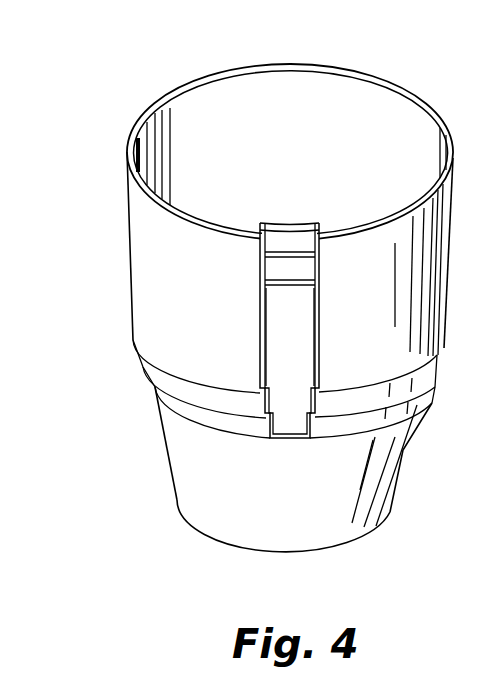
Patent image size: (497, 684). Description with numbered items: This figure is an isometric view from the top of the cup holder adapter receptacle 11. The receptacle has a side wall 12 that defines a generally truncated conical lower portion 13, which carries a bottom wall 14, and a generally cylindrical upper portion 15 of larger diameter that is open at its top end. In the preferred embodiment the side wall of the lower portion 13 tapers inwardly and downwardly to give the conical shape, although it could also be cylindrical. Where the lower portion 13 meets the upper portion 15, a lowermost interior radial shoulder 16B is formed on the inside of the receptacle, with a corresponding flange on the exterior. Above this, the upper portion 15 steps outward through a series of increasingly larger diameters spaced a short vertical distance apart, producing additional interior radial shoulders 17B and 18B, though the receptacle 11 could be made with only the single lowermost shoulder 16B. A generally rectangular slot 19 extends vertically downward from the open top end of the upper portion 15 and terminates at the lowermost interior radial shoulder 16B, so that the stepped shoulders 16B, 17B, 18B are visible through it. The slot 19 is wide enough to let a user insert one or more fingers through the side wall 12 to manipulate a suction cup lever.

The cup holder adapter receptacle 11 is at (211, 63).
The side wall 12 is at (140, 258).
The lower portion 13 is at (268, 502).
The bottom wall 14 is at (227, 537).
The upper portion 15 is at (214, 308).
The lowermost interior radial shoulder 16B is at (298, 295).
The interior radial shoulder 17B is at (282, 258).
The interior radial shoulder 18B is at (245, 222).
The slot 19 is at (298, 363).